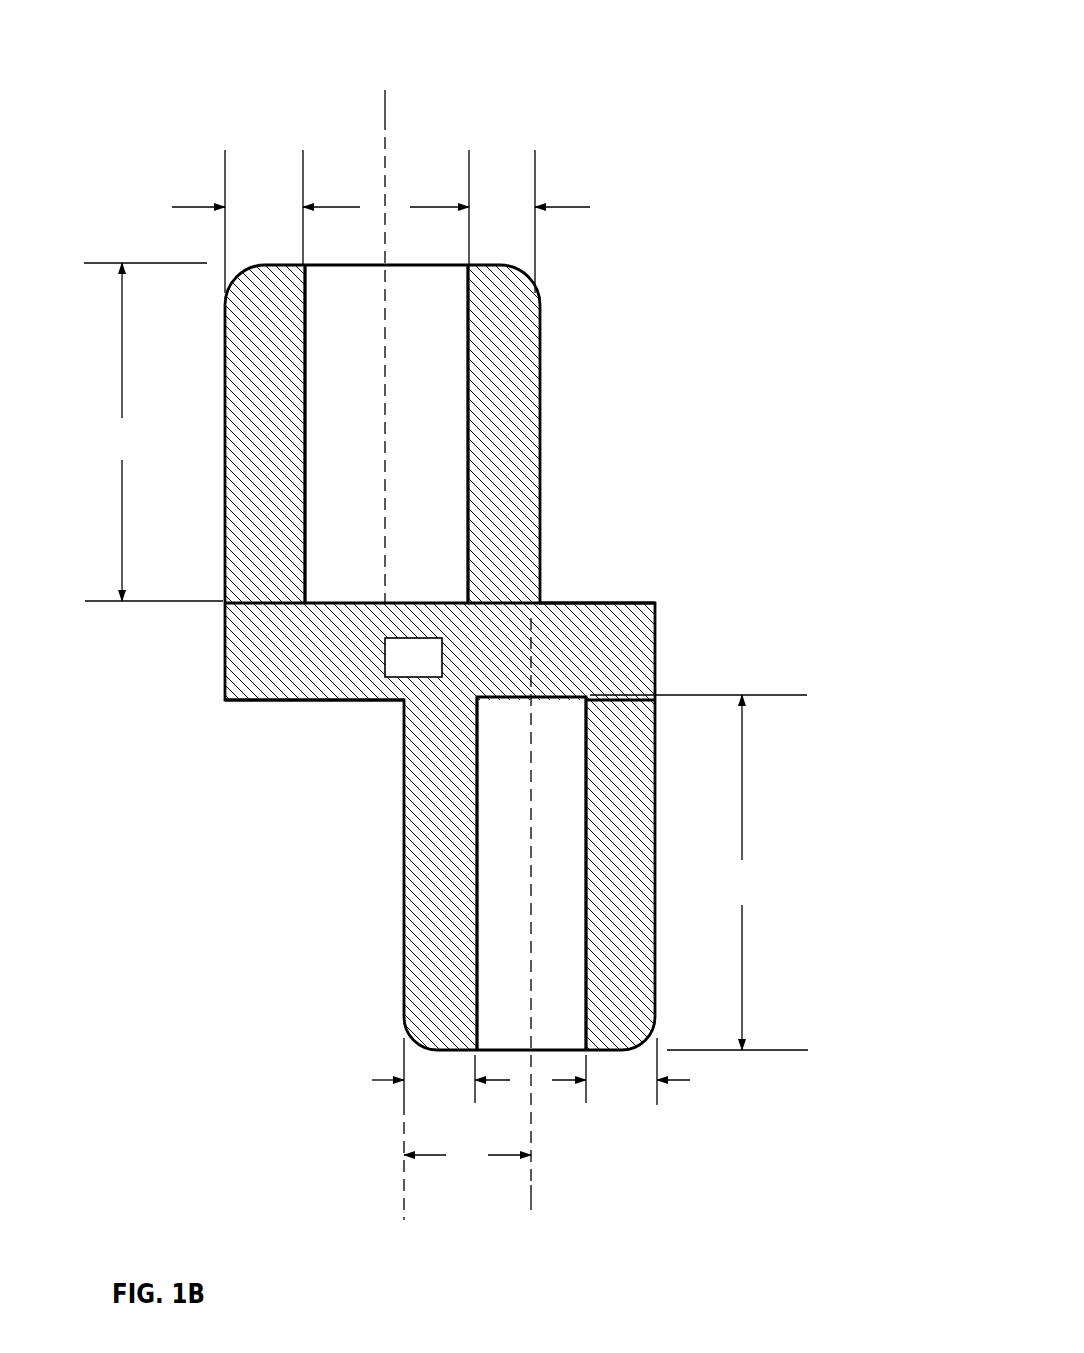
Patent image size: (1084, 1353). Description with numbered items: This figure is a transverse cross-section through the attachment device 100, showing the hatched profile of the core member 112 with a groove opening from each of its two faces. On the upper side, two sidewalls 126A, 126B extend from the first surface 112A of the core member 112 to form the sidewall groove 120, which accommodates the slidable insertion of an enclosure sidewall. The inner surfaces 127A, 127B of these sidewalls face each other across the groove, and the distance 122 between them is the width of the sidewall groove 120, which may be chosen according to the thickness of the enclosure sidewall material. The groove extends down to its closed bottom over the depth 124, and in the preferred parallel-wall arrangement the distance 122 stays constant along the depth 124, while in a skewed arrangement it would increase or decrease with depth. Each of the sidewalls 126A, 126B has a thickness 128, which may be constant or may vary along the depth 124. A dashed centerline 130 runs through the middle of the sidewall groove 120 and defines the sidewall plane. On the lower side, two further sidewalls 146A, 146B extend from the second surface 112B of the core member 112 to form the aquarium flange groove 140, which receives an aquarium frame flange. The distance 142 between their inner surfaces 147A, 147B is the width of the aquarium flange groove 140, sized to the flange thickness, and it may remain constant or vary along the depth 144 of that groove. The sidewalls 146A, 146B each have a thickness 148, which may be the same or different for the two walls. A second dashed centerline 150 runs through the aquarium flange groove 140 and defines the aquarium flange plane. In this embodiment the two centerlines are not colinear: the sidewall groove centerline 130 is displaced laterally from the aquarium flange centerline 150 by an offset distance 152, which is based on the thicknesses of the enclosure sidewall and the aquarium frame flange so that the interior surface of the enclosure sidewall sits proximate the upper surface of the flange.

The attachment device 100 is at (834, 24).
The core member 112 is at (440, 657).
The first surface of core member 112A is at (327, 596).
The second surface of core member 112B is at (292, 707).
The sidewall groove 120 is at (377, 434).
The distance between inner surfaces of sidewalls 122 is at (386, 207).
The depth of sidewall groove 124 is at (153, 432).
The sidewall 126A is at (236, 370).
The sidewall 126B is at (526, 366).
The inner surface of sidewall 127A is at (312, 376).
The inner surface of sidewall 127B is at (462, 321).
The thickness of sidewalls 128 is at (381, 221).
The centerline of sidewall groove 130 is at (385, 112).
The aquarium flange groove 140 is at (509, 873).
The distance between inner surfaces of sidewalls 142 is at (530, 1079).
The depth of aquarium flange groove 144 is at (699, 872).
The sidewall 146A is at (410, 985).
The sidewall 146B is at (642, 985).
The inner surface of sidewall 147A is at (484, 848).
The inner surface of sidewall 147B is at (580, 789).
The thickness of sidewalls 148 is at (531, 1071).
The centerline of aquarium flange groove 150 is at (531, 1195).
The offset distance 152 is at (467, 1161).